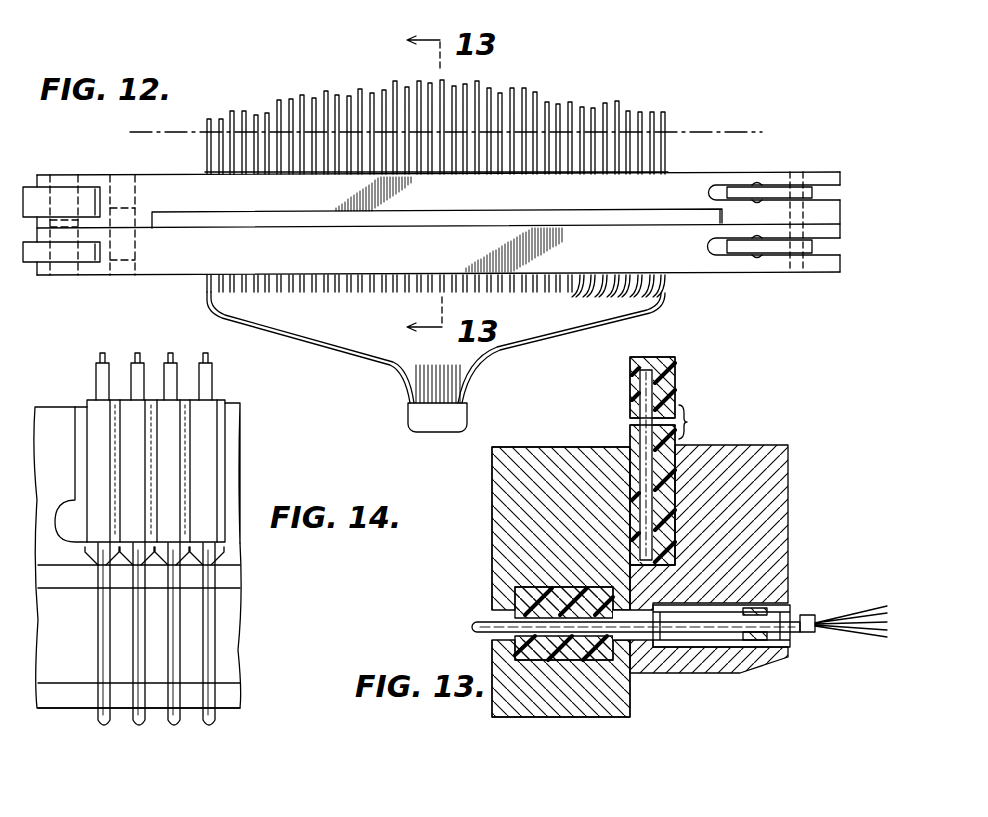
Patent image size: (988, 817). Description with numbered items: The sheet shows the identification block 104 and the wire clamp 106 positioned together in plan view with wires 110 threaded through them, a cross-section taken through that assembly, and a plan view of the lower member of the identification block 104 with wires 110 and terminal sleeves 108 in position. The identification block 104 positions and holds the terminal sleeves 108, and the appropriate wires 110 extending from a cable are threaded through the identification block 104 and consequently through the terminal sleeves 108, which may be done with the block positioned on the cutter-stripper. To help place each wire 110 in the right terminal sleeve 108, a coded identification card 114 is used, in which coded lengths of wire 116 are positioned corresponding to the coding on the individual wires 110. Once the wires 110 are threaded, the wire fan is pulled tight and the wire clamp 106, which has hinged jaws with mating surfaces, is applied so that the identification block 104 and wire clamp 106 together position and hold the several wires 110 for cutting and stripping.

In FIG. 12, the identification block 104 is at (705, 263).
In FIG. 14, the identification block 104 is at (52, 405).
In FIG. 13, the identification block 104 is at (788, 447).
In FIG. 12, the wire clamp 106 is at (683, 172).
In FIG. 13, the wire clamp 106 is at (502, 447).
In FIG. 14, the terminal sleeves 108 is at (205, 437).
In FIG. 13, the terminal sleeves 108 is at (797, 600).
In FIG. 12, the wires 110 is at (232, 102).
In FIG. 14, the wires 110 is at (205, 637).
In FIG. 13, the wires 110 is at (483, 619).
In FIG. 12, the identification card 114 is at (175, 221).
In FIG. 13, the identification card 114 is at (677, 381).
In FIG. 13, the coded lengths of wire 116 is at (645, 400).